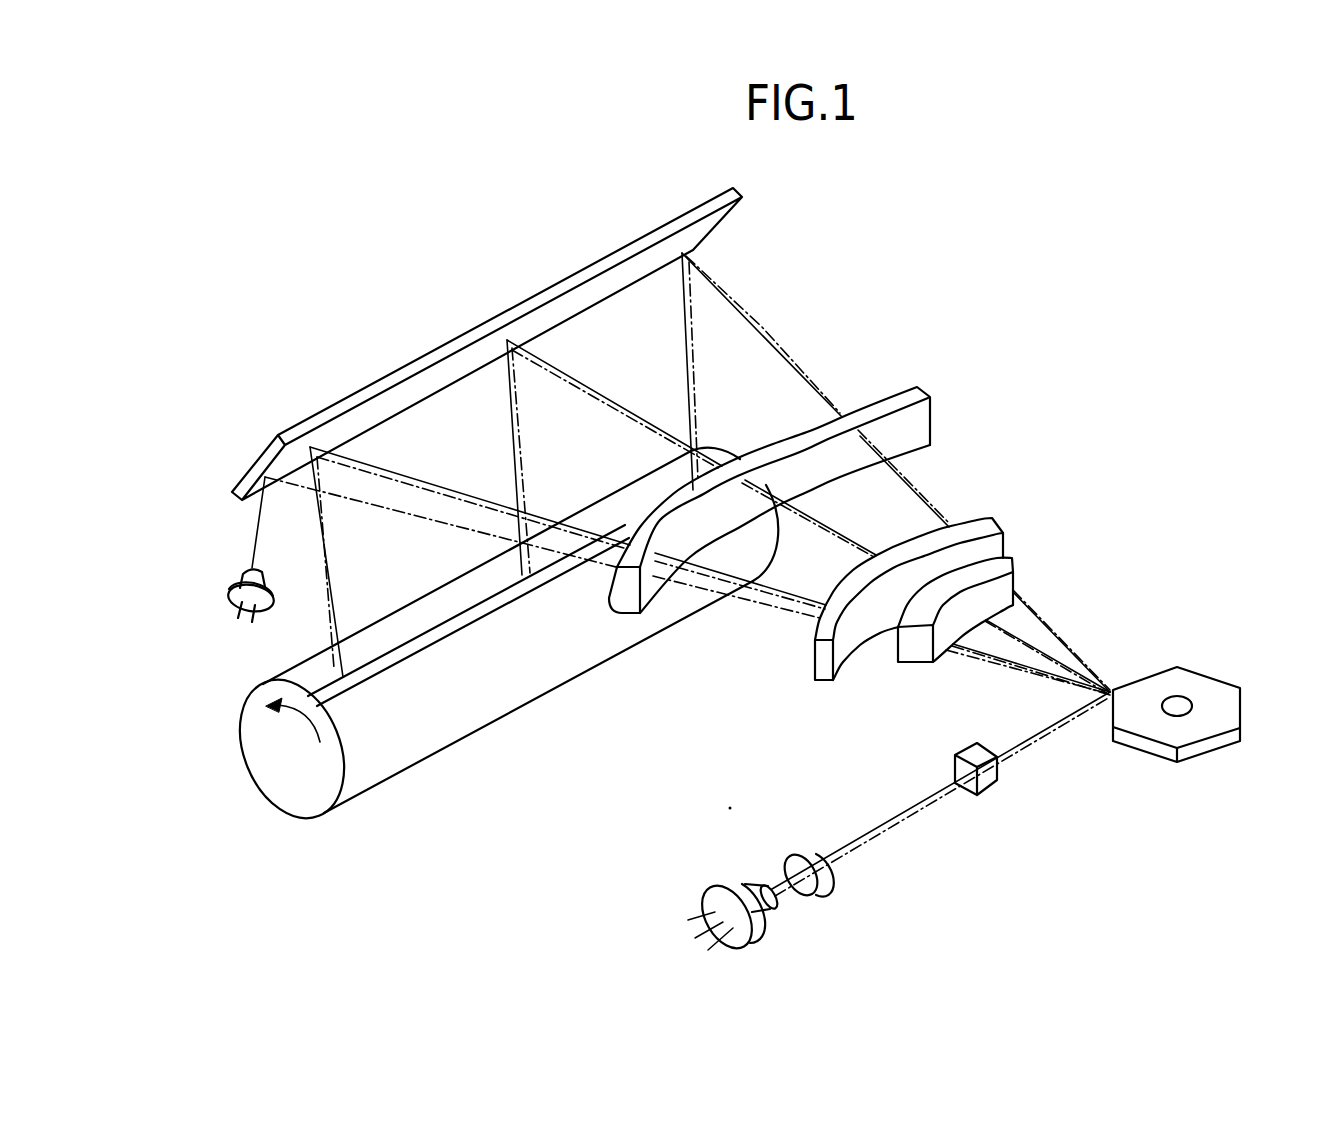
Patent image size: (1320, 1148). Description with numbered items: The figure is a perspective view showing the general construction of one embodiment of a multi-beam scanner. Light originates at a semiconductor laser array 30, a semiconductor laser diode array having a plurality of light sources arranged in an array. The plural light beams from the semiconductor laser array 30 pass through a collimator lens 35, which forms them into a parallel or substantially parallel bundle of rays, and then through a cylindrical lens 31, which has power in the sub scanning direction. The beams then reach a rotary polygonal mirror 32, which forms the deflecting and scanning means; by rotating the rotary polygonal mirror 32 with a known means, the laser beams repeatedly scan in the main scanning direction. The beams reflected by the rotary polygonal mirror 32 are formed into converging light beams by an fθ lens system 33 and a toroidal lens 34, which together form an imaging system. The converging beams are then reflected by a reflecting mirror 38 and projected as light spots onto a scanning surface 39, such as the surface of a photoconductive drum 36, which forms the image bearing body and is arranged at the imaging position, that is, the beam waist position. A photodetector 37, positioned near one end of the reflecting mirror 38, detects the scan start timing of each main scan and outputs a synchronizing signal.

The semiconductor laser array 30 is at (770, 903).
The cylindrical lens 31 is at (990, 787).
The rotary polygonal mirror 32 is at (1165, 750).
The fθ lens system 33 is at (1028, 518).
The toroidal lens 34 is at (925, 418).
The collimator lens 35 is at (818, 872).
The photoconductive drum 36 is at (420, 750).
The photodetector 37 is at (236, 588).
The reflecting mirror 38 is at (706, 233).
The scanning surface 39 is at (313, 661).